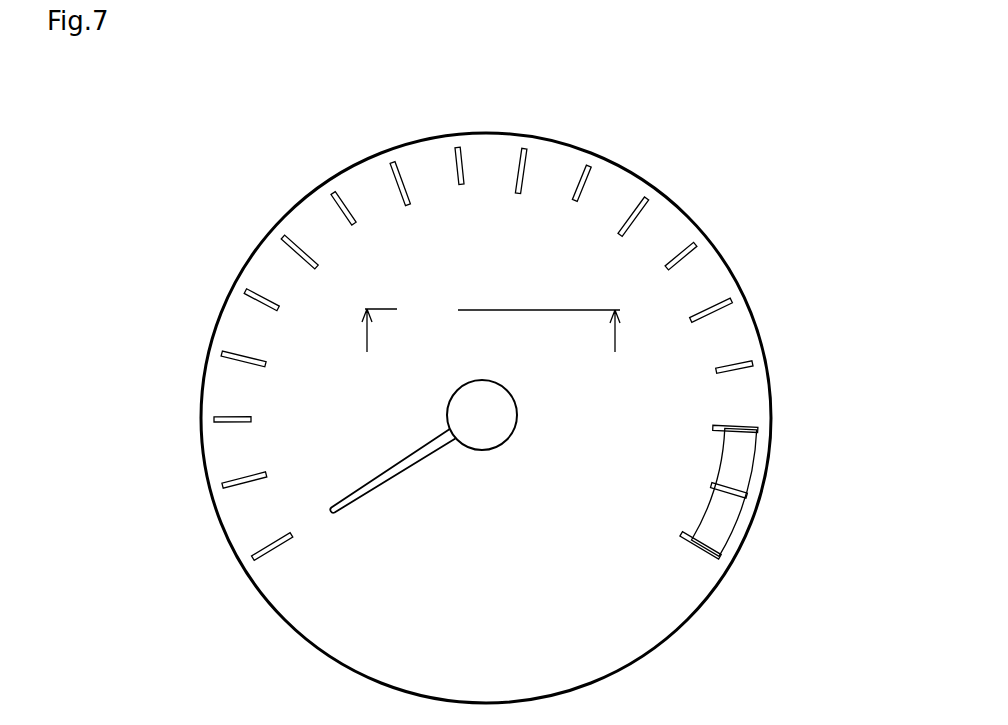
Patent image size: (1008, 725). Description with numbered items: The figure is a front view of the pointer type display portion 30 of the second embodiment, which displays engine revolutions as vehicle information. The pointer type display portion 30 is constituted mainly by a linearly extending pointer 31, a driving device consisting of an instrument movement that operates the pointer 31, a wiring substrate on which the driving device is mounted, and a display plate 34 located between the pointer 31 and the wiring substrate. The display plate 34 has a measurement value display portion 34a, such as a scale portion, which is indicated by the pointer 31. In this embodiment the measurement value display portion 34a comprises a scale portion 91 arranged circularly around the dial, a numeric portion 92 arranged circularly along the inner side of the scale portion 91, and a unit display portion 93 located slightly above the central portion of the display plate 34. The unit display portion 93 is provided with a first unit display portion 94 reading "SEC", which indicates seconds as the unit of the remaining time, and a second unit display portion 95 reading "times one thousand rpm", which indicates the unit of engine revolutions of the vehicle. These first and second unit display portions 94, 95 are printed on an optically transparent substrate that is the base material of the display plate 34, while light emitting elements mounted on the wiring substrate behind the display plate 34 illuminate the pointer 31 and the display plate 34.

The pointer type display portion 30 is at (749, 280).
The pointer 31 is at (400, 467).
The display plate 34 is at (745, 395).
The measurement value display portion 34a is at (496, 218).
The scale portion 91 is at (282, 238).
The numeric portion 92 is at (613, 257).
The unit display portion 93 is at (460, 224).
The first unit display portion 94 is at (406, 300).
The second unit display portion 95 is at (531, 287).